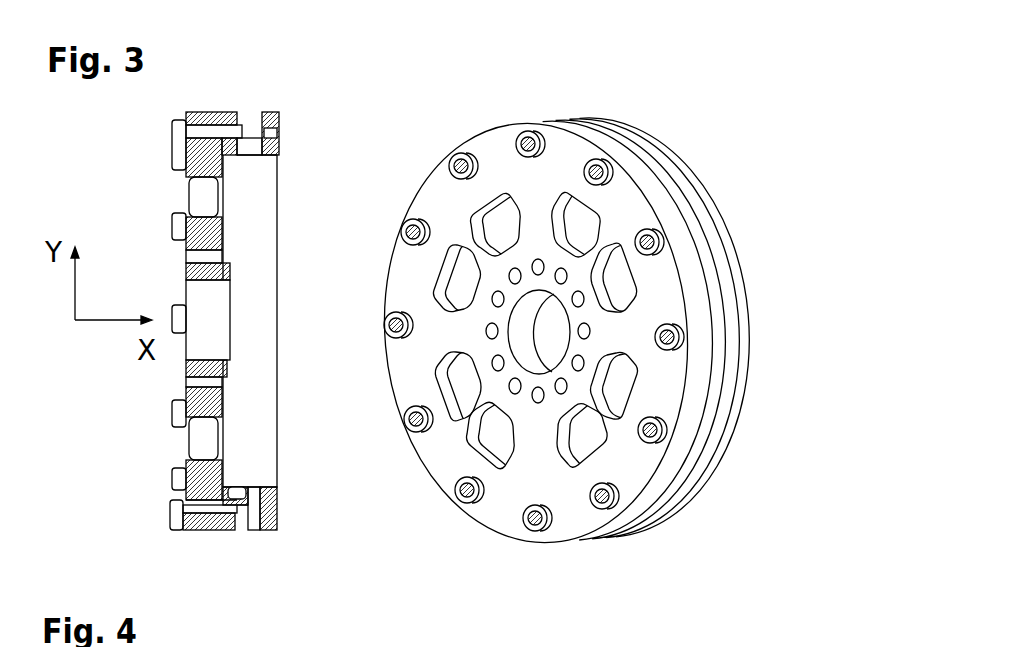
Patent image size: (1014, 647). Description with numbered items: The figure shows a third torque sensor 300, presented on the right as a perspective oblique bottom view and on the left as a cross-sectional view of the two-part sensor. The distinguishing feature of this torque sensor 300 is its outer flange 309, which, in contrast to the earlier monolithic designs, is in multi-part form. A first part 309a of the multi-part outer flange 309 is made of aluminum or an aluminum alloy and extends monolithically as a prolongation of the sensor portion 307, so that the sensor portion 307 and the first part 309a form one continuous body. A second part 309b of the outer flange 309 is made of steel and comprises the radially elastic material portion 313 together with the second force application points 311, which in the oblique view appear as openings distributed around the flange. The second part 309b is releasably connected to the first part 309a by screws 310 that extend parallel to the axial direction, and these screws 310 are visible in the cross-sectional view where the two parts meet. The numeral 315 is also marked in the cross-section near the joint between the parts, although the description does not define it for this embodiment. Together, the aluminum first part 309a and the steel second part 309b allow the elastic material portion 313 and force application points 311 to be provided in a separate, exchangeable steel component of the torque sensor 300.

The third torque sensor 300 is at (521, 353).
The sensor portion 307 is at (222, 440).
The outer flange 309 is at (725, 584).
The first part 309a is at (185, 478).
The second part 309b is at (270, 482).
The screws 310 is at (180, 520).
The second force application points 311 is at (277, 515).
The radially elastic material portion 313 is at (248, 523).
The rim well 315 is at (243, 532).